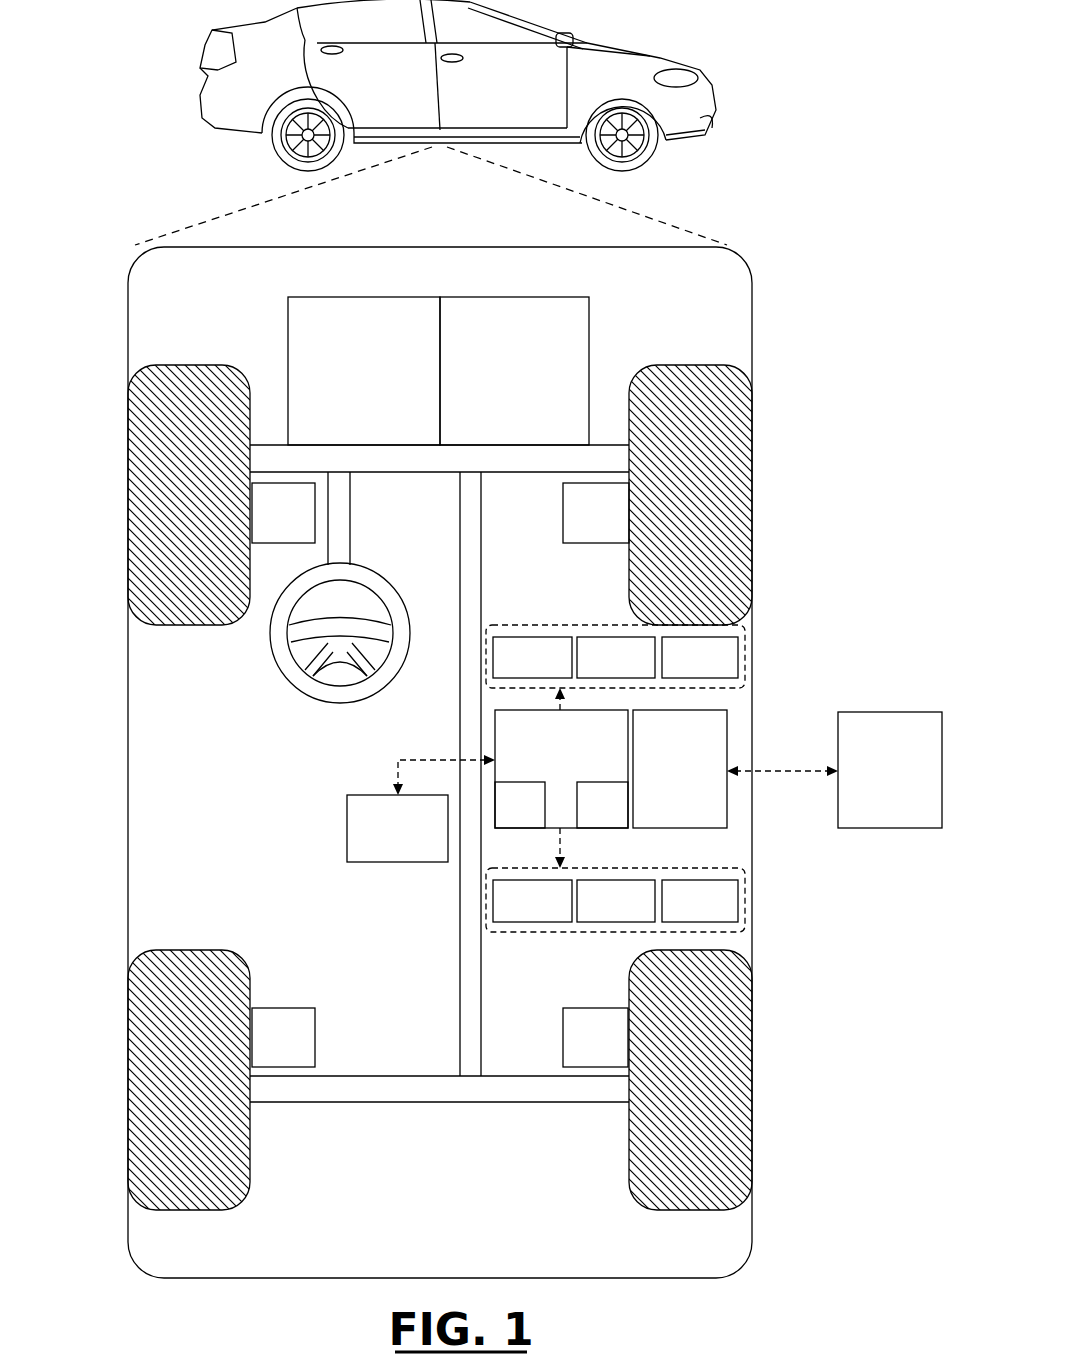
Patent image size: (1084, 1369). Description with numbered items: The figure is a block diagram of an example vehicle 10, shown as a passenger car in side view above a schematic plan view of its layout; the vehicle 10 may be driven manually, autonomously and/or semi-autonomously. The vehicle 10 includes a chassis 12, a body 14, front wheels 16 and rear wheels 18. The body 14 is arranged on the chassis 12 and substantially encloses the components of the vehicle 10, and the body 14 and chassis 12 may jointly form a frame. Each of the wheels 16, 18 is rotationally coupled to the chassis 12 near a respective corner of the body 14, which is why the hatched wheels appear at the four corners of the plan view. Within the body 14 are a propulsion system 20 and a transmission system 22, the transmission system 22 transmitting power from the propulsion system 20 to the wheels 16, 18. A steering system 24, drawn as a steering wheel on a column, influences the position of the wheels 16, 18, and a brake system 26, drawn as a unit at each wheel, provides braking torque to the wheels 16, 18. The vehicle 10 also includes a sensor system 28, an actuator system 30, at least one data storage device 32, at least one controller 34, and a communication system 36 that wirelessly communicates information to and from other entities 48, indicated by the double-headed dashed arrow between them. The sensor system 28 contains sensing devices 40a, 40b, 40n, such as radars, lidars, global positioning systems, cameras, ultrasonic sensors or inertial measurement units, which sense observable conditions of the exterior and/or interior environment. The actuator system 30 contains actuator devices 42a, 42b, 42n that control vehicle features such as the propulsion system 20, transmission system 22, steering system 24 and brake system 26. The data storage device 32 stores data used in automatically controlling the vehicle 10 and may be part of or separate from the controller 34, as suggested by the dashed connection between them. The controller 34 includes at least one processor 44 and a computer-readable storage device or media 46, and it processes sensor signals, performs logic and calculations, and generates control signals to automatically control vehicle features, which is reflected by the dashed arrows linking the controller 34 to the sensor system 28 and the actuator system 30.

The vehicle 10 is at (190, 78).
The chassis 12 is at (460, 913).
The body 14 is at (127, 725).
The front wheels 16 is at (190, 365).
The rear wheels 18 is at (188, 1212).
The propulsion system 20 is at (349, 388).
The transmission system 22 is at (500, 388).
The steering system 24 is at (355, 544).
The brake system 26 is at (268, 527).
The sensor system 28 is at (575, 625).
The actuator system 30 is at (582, 932).
The data storage device 32 is at (382, 843).
The controller 34 is at (547, 765).
The communication system 36 is at (665, 790).
The sensing device 40a is at (510, 671).
The sensing device 40b is at (594, 671).
The sensing device 40n is at (678, 671).
The actuator device 42a is at (510, 915).
The actuator device 42b is at (594, 915).
The actuator device 42n is at (678, 915).
The processor 44 is at (505, 822).
The computer-readable storage device or media 46 is at (587, 822).
The other entities 48 is at (874, 785).